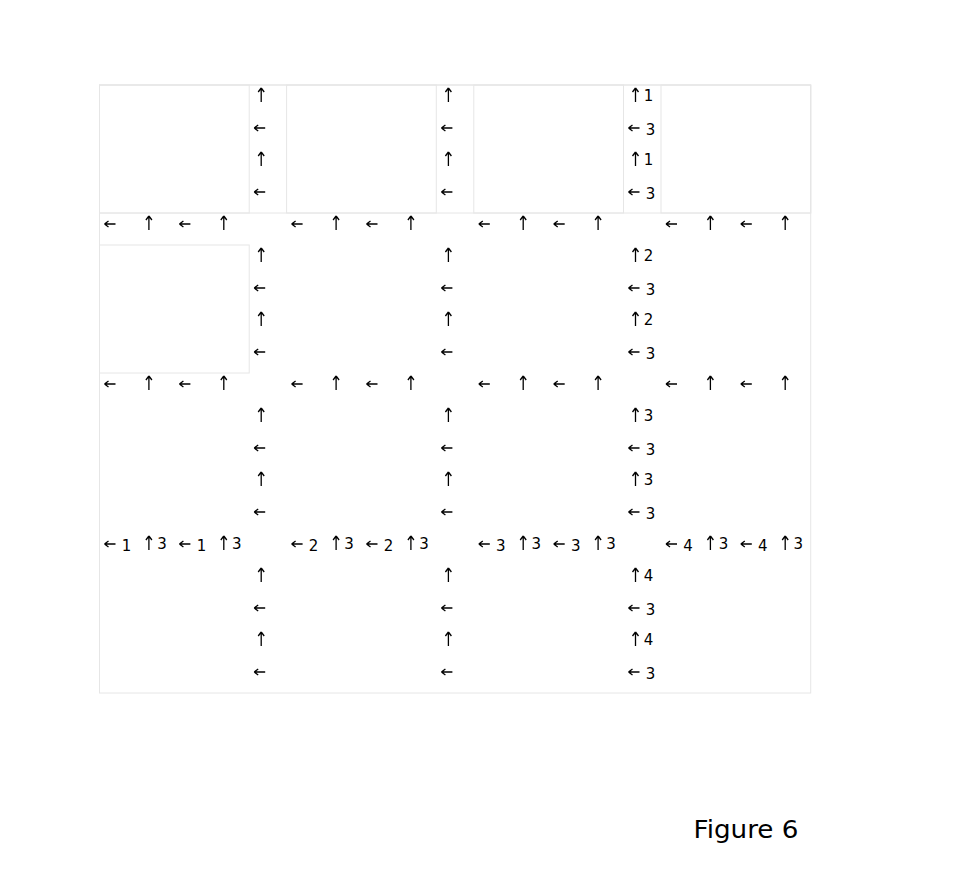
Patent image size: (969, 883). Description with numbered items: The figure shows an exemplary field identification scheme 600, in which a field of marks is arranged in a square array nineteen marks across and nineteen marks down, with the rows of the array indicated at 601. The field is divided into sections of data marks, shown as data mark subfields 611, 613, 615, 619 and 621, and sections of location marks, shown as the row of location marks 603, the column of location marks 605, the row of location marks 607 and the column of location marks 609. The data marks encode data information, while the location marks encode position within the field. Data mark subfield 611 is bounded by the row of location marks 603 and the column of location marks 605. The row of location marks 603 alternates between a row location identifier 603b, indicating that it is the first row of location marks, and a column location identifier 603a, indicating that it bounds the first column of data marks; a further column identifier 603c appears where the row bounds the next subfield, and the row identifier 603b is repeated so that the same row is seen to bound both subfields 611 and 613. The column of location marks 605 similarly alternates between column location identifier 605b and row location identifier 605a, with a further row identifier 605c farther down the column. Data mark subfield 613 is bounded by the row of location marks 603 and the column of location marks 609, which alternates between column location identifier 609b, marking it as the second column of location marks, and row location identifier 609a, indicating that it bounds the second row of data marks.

The weight matrix / grid diagram 600 is at (796, 56).
The rows of grid 601 is at (98, 193).
The row of location marks 603 is at (90, 224).
The column location identifier 603a is at (115, 240).
The row location identifier 603b is at (165, 240).
The left-arrow cell 2 603c is at (307, 240).
The column of location marks 605 is at (268, 70).
The row location identifier 605a is at (250, 107).
The column location identifier 605b is at (252, 135).
The up-arrow cell 2 of column 605c is at (248, 325).
The row of location marks 607 is at (92, 391).
The column of location marks 609 is at (455, 70).
The row location identifier 609a is at (437, 107).
The column location identifier 609b is at (437, 135).
The data mark subfield 611 is at (161, 158).
The data mark subfield 613 is at (346, 158).
The data mark section 615 is at (535, 157).
The data mark section 619 is at (718, 152).
The data mark section 621 is at (161, 305).